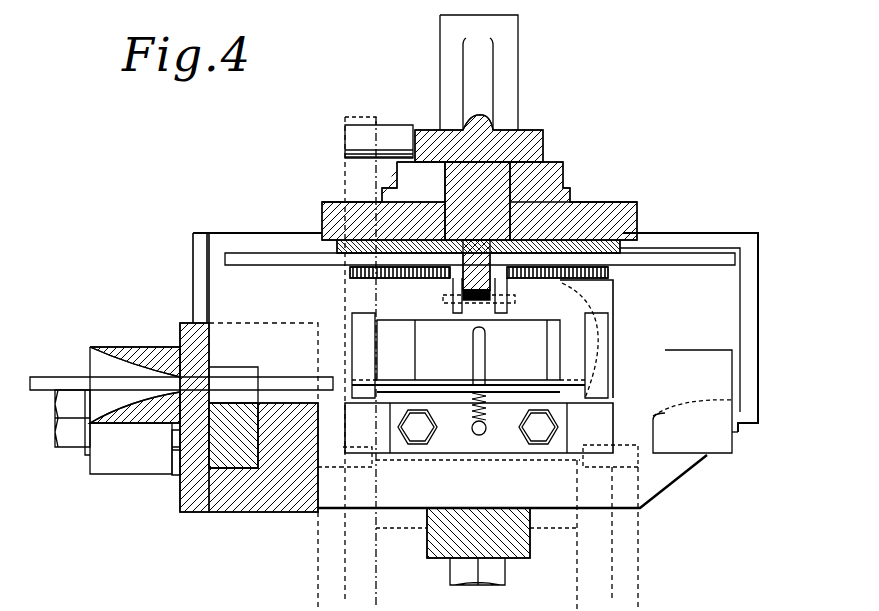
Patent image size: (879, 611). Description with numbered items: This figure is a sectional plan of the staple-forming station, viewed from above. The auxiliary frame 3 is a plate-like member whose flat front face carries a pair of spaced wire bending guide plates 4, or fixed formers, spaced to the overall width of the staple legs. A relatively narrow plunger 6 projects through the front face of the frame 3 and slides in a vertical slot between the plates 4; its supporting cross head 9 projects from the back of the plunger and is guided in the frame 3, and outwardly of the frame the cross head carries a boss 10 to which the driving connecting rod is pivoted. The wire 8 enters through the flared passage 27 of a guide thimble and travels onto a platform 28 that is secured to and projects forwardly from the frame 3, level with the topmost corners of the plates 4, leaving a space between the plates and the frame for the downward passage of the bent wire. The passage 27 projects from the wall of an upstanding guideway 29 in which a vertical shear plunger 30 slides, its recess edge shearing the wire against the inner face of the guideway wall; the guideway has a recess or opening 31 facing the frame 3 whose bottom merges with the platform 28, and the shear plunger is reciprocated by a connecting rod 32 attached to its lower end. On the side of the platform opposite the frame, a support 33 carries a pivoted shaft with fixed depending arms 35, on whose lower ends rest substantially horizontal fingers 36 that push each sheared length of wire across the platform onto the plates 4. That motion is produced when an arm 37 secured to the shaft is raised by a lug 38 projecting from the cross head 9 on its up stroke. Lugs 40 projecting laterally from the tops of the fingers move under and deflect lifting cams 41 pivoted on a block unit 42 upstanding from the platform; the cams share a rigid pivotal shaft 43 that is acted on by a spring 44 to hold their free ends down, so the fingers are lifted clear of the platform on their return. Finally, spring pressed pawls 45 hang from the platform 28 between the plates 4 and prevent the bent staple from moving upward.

The auxiliary frame 3 is at (615, 200).
The wire bending guide plates 4 is at (407, 280).
The plunger 6 is at (465, 272).
The wire 8 is at (55, 380).
The cross head 9 is at (480, 195).
The boss 10 is at (520, 52).
The passage 27 is at (137, 370).
The platform 28 is at (705, 315).
The guideway 29 is at (250, 512).
The shear plunger 30 is at (222, 445).
The recess or opening 31 is at (273, 370).
The connecting rod 32 is at (125, 450).
The support 33 is at (430, 560).
The depending arms 35 is at (372, 548).
The fingers 36 is at (318, 535).
The arm 37 is at (345, 176).
The lug 38 is at (357, 143).
The lugs 40 is at (355, 467).
The lifting cams 41 is at (358, 325).
The block unit 42 is at (452, 453).
The pivotal shaft 43 is at (437, 385).
The spring 44 is at (490, 410).
The spring pressed pawls 45 is at (458, 290).